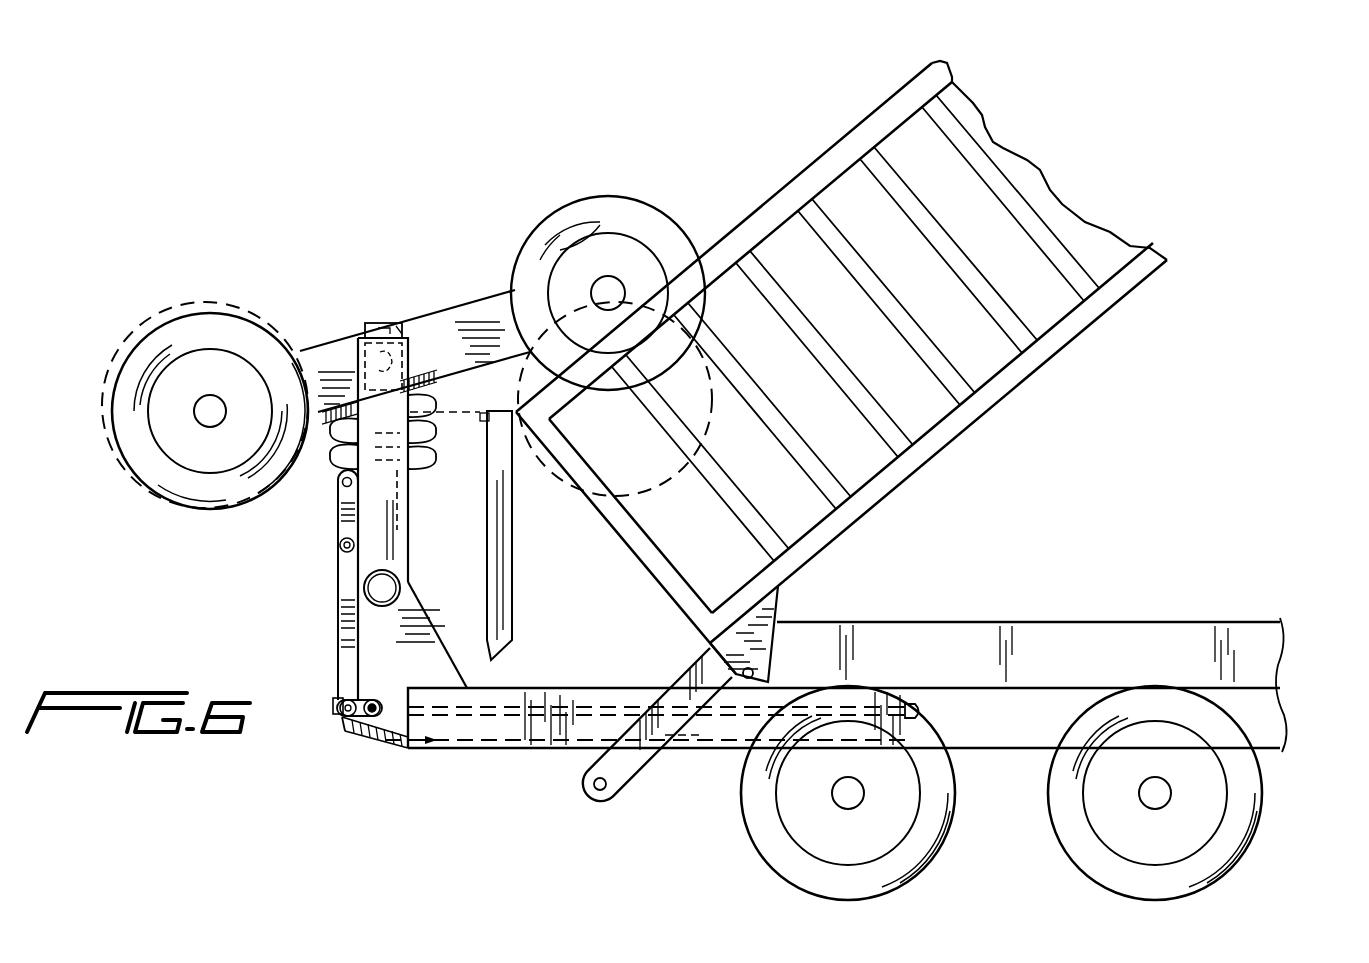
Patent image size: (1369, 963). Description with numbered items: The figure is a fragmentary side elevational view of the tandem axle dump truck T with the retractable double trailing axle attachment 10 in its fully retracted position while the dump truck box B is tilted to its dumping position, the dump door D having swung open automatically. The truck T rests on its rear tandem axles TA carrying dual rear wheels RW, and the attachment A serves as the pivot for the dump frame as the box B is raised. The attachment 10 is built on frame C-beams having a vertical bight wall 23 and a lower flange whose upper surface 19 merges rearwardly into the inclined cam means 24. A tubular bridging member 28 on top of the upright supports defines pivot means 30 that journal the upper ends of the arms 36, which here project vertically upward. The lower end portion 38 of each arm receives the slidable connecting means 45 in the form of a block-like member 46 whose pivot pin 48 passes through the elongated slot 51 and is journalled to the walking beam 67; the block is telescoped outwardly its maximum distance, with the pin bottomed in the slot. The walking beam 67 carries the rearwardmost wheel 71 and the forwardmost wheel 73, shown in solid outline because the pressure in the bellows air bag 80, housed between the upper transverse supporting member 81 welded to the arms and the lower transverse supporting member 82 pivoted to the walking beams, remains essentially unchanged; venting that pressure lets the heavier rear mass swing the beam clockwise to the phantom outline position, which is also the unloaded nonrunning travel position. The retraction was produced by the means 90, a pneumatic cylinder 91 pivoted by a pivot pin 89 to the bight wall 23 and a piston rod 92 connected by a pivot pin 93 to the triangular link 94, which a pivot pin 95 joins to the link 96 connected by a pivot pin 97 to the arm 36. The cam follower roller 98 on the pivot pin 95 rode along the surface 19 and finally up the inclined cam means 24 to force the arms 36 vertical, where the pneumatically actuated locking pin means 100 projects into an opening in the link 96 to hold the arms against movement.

The retractable double trailing axle attachment 10 is at (443, 215).
The upper surface 19 is at (475, 750).
The bight wall 23 is at (1056, 722).
The cam means 24 is at (382, 748).
The tubular bridging member 28 is at (424, 612).
The pivot means 30 is at (398, 582).
The arm 36 is at (388, 530).
The lower end portion of arm 38 is at (352, 337).
The slidable connecting means 45 is at (372, 320).
The block-like member 46 is at (383, 330).
The pivot pin 48 is at (406, 330).
The elongated slot 51 is at (400, 380).
The walking beam 67 is at (590, 752).
The rearwardmost wheel assembly 71 is at (652, 215).
The forwardmost wheel assembly 73 is at (188, 303).
The pneumatic biasing means 80 is at (440, 442).
The upper transverse supporting member 81 is at (405, 492).
The lower transverse supporting member 82 is at (437, 383).
The pivot pin 89 is at (920, 708).
The force imparting means 90 is at (706, 750).
The pneumatic cylinder 91 is at (760, 682).
The piston rod 92 is at (412, 748).
The pivot pin 93 is at (378, 702).
The triangular link 94 is at (366, 700).
The pivot pin 95 is at (346, 722).
The link 96 is at (340, 598).
The pivot pin 97 is at (340, 490).
The cam follower roller 98 is at (333, 704).
The locking pin means 100 is at (334, 550).
The attachment A is at (648, 770).
The dump truck box B is at (1060, 338).
The dump door D is at (505, 538).
The tandem axle dump truck T is at (1285, 418).
The rear tandem axles TA is at (858, 800).
The dual rear wheels RW is at (945, 798).